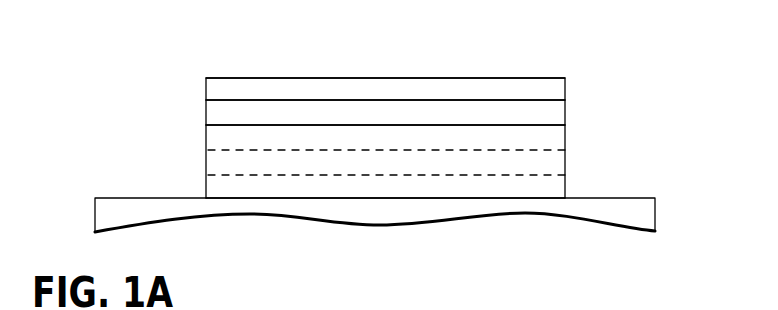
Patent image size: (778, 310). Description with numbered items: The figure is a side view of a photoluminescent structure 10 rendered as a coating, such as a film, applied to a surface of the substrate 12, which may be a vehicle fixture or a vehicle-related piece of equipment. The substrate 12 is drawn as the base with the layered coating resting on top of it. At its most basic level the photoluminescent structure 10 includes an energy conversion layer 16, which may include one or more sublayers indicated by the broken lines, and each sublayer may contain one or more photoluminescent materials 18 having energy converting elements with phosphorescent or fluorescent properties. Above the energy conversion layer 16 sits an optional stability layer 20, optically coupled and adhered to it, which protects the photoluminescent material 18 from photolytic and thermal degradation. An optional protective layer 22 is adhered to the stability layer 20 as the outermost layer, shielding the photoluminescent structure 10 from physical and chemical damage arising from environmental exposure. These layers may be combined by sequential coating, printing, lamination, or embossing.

The photoluminescent structure 10 is at (511, 54).
The substrate 12 is at (605, 198).
The energy conversion layer 16 is at (206, 160).
The photoluminescent material 18 is at (523, 165).
The stability layer 20 is at (206, 113).
The protective layer 22 is at (287, 77).